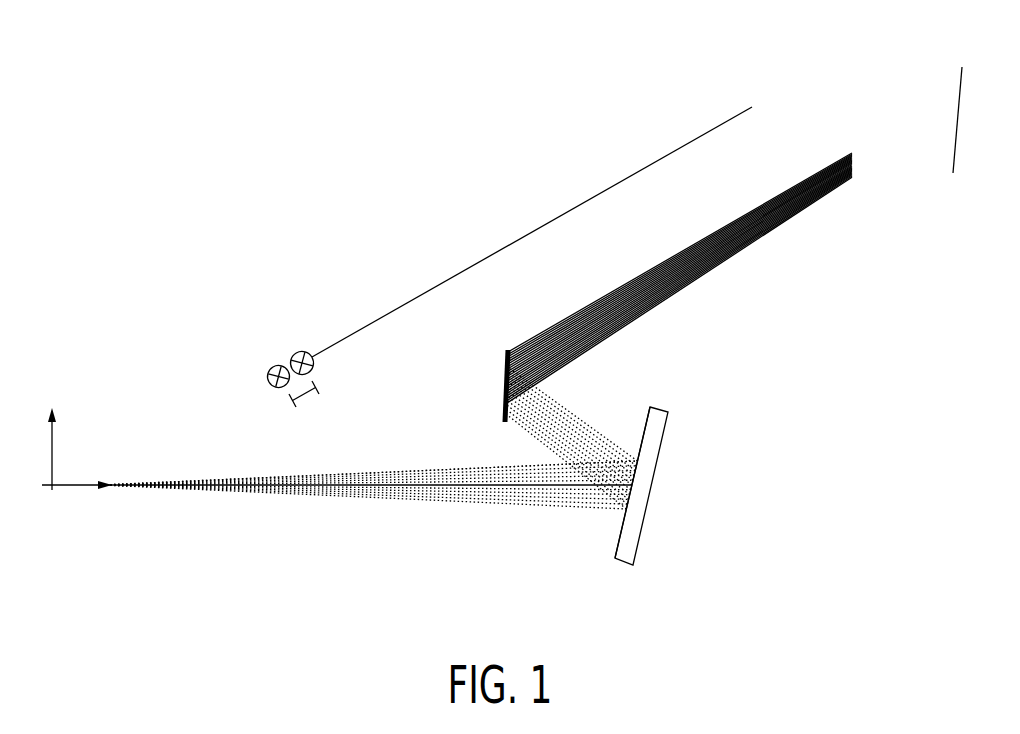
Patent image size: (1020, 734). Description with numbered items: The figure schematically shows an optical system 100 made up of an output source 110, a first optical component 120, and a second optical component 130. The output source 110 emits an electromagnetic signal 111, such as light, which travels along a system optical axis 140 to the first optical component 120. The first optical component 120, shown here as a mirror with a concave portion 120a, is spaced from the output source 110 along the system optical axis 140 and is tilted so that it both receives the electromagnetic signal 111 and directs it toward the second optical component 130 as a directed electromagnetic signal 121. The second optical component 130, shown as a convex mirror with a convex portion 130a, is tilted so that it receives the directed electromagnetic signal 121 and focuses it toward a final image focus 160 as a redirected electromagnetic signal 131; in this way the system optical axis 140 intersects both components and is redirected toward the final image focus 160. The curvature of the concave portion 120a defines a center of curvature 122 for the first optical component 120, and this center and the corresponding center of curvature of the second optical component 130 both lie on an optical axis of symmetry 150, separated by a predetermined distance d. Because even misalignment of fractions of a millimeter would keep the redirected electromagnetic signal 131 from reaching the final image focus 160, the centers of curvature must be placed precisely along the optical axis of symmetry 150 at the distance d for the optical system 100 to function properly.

The optical system 100 is at (820, 103).
The output source 110 is at (105, 500).
The electromagnetic signal 111 is at (376, 467).
The first optical component 120 is at (632, 540).
The concave portion 120a is at (622, 527).
The directed electromagnetic signal 121 is at (600, 432).
The center of curvature 122 is at (264, 378).
The second optical component 130 is at (500, 360).
The convex portion 130a is at (511, 358).
The redirected electromagnetic signal 131 is at (672, 260).
The system optical axis 140 is at (338, 502).
The optical axis of symmetry 150 is at (476, 262).
The final image focus 160 is at (956, 147).
The distance d is at (304, 394).